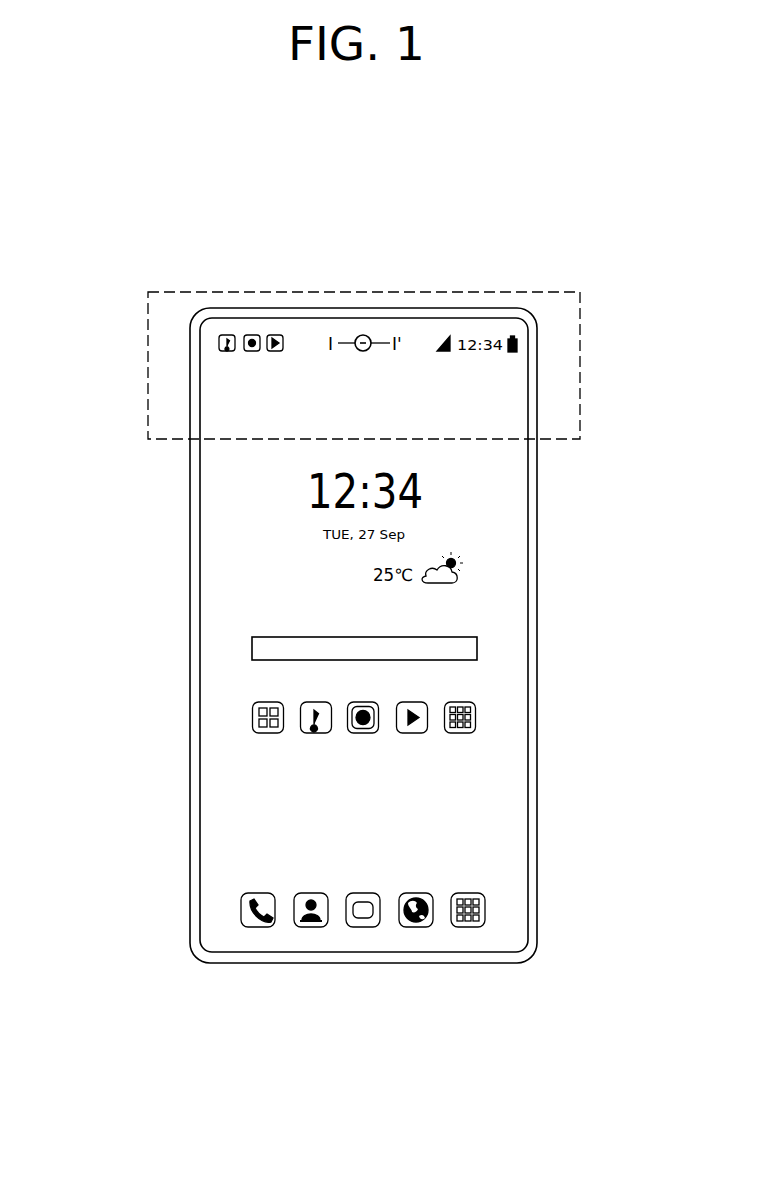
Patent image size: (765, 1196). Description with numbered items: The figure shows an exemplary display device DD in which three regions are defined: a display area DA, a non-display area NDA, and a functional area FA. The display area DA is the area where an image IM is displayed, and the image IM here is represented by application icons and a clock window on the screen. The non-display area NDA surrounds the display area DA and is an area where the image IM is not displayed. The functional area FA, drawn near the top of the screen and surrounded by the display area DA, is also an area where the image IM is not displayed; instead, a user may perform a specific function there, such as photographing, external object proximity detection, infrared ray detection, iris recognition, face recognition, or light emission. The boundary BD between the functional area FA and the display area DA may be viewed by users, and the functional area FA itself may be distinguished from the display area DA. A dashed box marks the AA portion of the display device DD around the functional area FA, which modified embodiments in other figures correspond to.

The display device DD is at (567, 260).
The AA portion AA is at (148, 343).
The functional area FA is at (363, 335).
The boundary BD is at (370, 336).
The display area DA is at (518, 614).
The non-display area NDA is at (533, 647).
The image IM is at (476, 716).